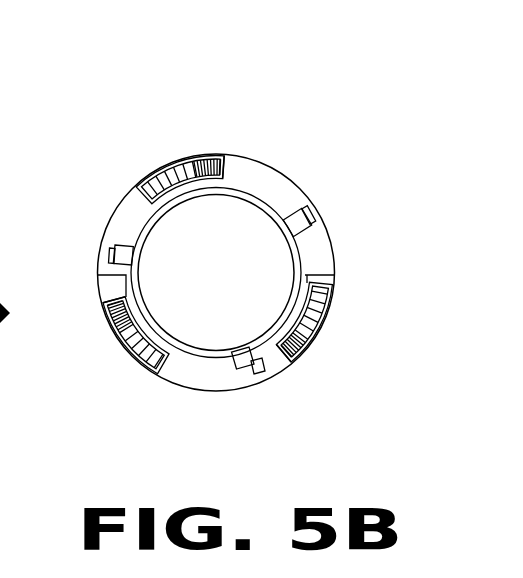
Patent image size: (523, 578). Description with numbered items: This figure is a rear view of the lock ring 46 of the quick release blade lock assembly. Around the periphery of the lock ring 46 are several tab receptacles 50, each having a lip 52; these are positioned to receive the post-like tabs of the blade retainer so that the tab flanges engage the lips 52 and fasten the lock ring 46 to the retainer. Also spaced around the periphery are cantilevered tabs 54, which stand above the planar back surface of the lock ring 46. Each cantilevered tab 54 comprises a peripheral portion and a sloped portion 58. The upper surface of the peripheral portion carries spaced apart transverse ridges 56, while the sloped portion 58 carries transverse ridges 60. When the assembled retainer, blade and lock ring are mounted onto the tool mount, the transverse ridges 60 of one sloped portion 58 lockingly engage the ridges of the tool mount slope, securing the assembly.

The lock ring 46 is at (121, 192).
The peripheral tab receptacle 50 is at (119, 246).
The lip 52 is at (110, 254).
The cantilevered tab 54 is at (147, 173).
The transverse ridges 56 is at (186, 163).
The sloped portion 58 is at (207, 162).
The transverse ridges of sloped portion 60 is at (227, 160).